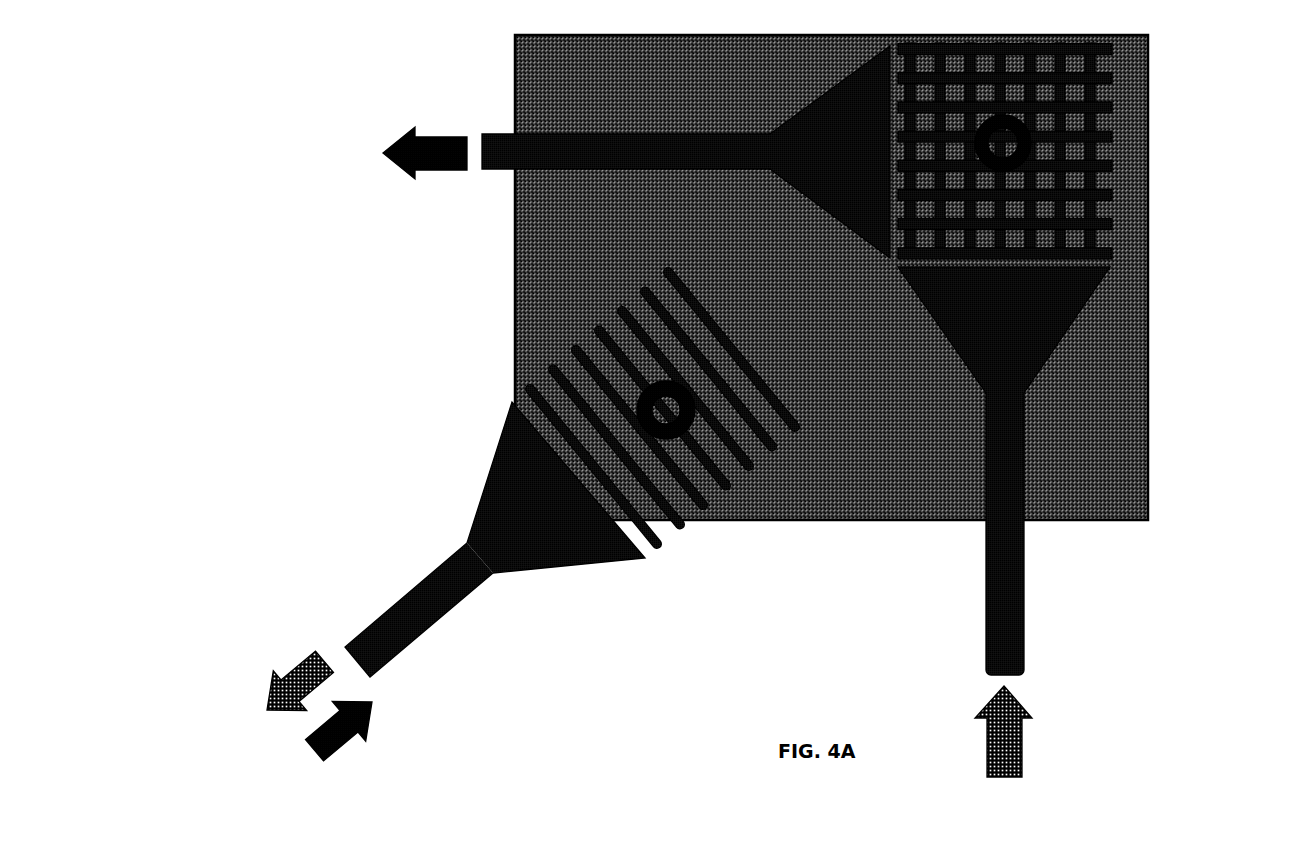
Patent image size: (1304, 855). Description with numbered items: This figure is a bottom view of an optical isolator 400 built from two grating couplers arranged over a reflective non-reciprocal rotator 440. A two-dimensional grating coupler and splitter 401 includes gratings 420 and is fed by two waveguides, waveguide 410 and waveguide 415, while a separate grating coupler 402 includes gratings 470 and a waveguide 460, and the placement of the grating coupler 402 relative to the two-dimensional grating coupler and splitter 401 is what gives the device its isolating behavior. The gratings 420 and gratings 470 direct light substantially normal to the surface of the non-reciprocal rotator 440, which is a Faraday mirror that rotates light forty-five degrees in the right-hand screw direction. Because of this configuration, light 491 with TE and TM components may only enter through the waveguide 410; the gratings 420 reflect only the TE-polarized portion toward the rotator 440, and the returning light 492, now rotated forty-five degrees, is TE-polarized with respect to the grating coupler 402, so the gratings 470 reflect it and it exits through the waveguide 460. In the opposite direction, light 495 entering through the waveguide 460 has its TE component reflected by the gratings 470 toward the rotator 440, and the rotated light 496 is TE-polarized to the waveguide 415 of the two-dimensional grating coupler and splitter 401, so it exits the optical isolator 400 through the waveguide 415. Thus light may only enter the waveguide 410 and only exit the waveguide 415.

The optical isolator 400 is at (314, 73).
The 2D grating coupler and splitter 401 is at (920, 300).
The grating coupler 402 is at (647, 562).
The waveguide 410 is at (1012, 610).
The waveguide 415 is at (553, 148).
The gratings 420 is at (1073, 102).
The reflective non-reciprocal rotator 440 is at (1117, 429).
The waveguide 460 is at (430, 627).
The gratings 470 is at (553, 365).
The light 491 is at (1020, 770).
The light 492 is at (310, 660).
The light 495 is at (342, 753).
The light 496 is at (408, 178).